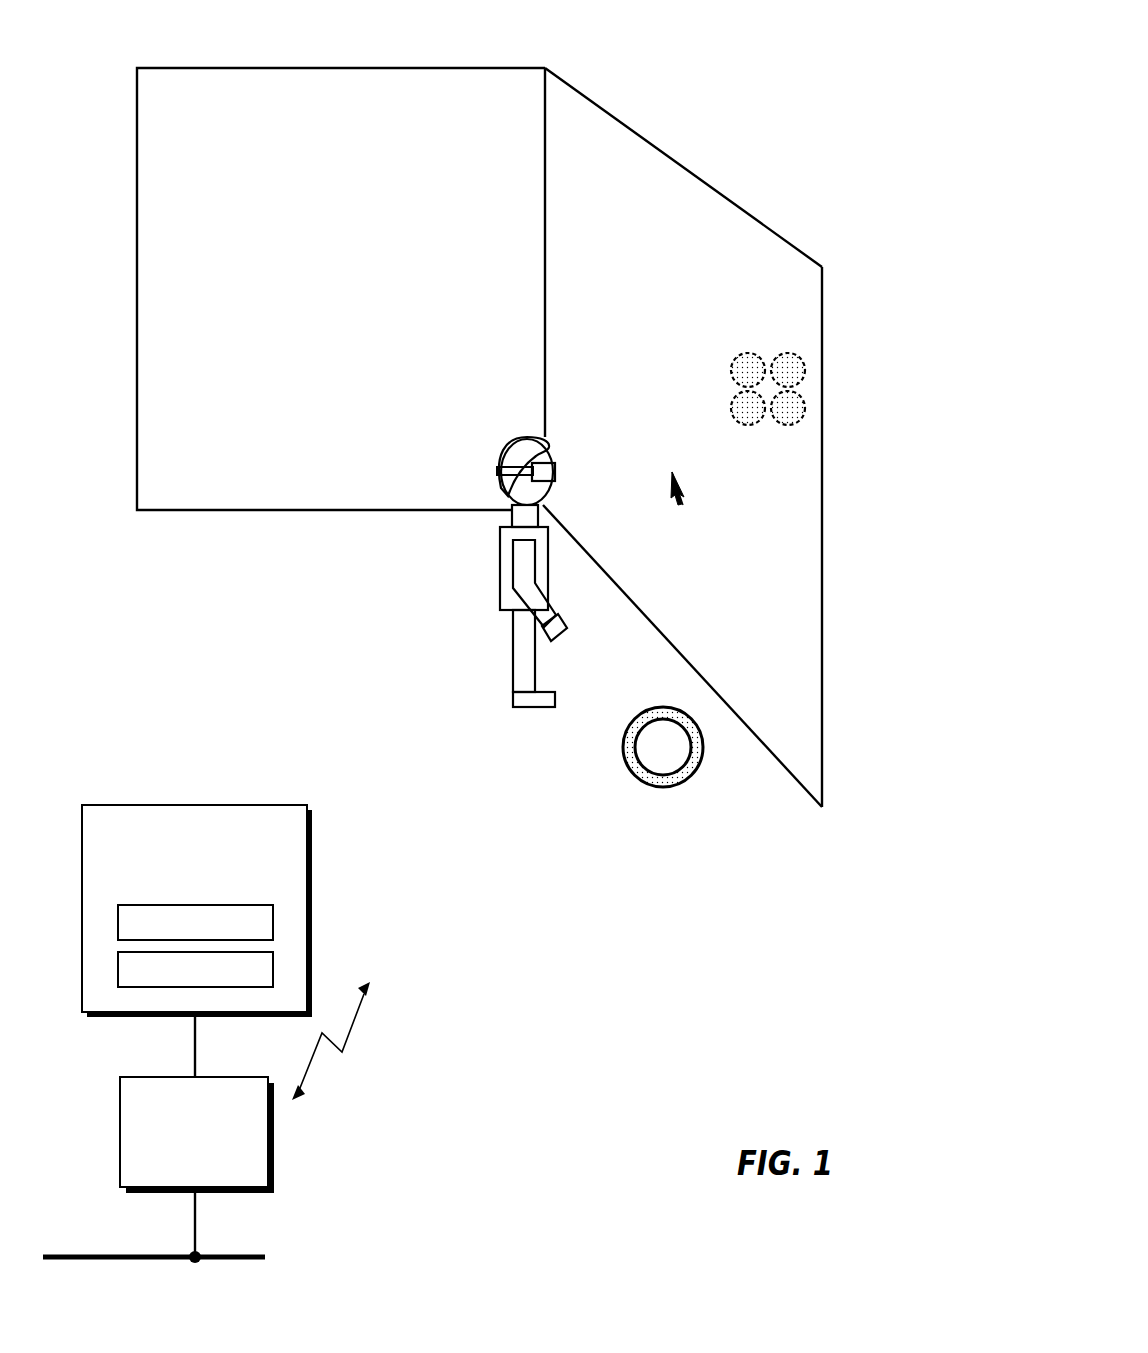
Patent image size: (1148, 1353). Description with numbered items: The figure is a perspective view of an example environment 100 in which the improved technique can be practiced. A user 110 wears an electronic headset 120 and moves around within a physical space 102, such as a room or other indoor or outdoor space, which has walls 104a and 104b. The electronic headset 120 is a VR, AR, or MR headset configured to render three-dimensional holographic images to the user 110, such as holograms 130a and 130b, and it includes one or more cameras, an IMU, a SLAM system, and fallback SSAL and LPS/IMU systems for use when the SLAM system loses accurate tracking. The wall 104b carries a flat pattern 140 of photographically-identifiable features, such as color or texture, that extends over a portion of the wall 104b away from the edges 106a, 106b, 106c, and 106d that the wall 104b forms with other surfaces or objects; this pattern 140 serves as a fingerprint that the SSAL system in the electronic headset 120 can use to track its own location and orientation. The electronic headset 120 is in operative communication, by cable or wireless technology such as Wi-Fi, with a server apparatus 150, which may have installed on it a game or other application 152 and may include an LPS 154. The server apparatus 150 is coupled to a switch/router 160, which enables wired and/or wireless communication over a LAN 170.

The environment 100 is at (874, 101).
The physical space 102 is at (251, 550).
The wall 104a is at (325, 122).
The wall 104b is at (587, 212).
The edge 106a is at (544, 277).
The edge 106b is at (718, 183).
The edge 106c is at (823, 493).
The edge 106d is at (652, 630).
The user 110 is at (491, 553).
The electronic headset 120 is at (554, 463).
The hologram 130a is at (641, 781).
The hologram 130b is at (745, 372).
The pattern 140 is at (676, 486).
The server apparatus 150 is at (215, 872).
The game or other application 152 is at (263, 932).
The LPS 154 is at (233, 979).
The switch/router 160 is at (255, 1157).
The LAN 170 is at (176, 1254).